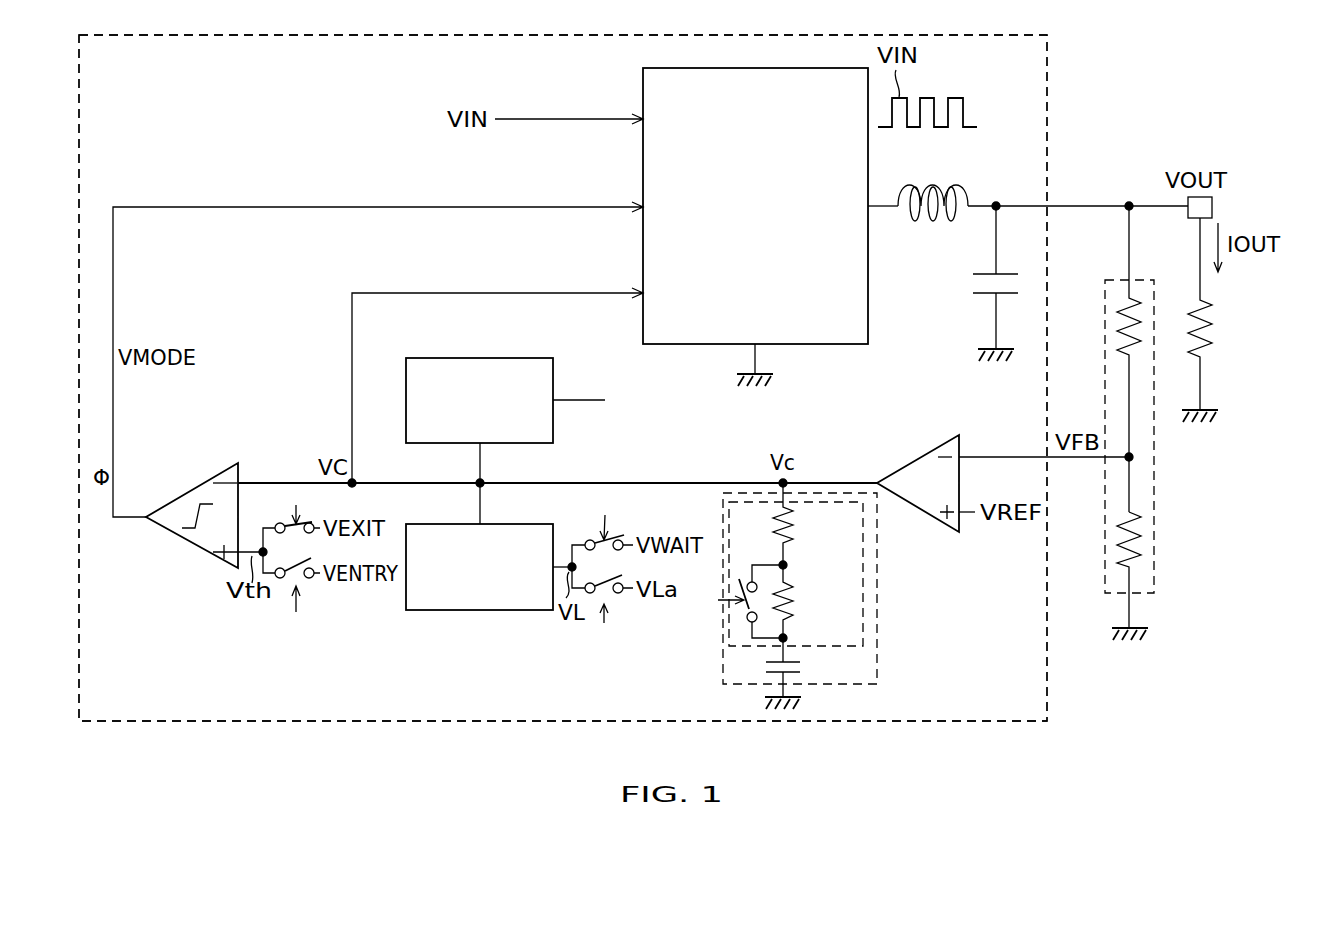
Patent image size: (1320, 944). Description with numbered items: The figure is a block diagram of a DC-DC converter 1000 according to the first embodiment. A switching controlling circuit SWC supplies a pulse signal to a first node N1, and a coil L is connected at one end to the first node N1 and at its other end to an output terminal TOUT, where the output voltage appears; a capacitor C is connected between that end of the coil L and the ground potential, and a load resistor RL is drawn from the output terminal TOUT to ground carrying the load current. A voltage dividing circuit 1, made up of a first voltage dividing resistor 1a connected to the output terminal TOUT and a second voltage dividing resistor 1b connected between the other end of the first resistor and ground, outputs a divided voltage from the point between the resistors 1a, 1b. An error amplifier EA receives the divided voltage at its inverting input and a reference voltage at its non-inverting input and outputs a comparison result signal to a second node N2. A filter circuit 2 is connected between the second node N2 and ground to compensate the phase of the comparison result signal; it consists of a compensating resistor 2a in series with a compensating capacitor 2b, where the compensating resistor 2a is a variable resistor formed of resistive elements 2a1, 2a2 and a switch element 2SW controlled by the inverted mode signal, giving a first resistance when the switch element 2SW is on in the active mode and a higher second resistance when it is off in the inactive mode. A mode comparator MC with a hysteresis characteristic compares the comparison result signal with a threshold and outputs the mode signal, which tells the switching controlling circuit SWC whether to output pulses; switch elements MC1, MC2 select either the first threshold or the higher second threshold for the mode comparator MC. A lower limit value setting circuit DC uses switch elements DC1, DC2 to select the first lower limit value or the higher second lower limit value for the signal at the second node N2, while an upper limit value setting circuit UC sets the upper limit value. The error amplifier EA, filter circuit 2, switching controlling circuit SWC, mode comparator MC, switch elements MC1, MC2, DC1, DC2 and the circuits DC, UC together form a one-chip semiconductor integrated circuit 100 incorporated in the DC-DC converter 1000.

The DC-DC converter 1000 is at (710, 757).
The semiconductor integrated circuit 100 is at (1047, 87).
The voltage dividing circuit 1 is at (1144, 423).
The first voltage dividing resistor 1a is at (1120, 320).
The second voltage dividing resistor 1b is at (1120, 533).
The filter circuit 2 is at (817, 596).
The compensating resistor 2a is at (807, 567).
The resistive element 2a1 is at (795, 531).
The resistive element 2a2 is at (795, 608).
The compensating capacitor 2b is at (800, 660).
The switch element 2SW is at (742, 610).
The switching controlling circuit SWC is at (643, 83).
The upper limit value setting circuit UC is at (480, 357).
The lower limit value setting circuit DC is at (480, 612).
The mode comparator MC is at (185, 492).
The switch element MC1 is at (296, 577).
The switch element MC2 is at (292, 524).
The switch element DC1 is at (602, 585).
The switch element DC2 is at (590, 540).
The error amplifier EA is at (912, 458).
The first node N1 is at (870, 205).
The second node N2 is at (484, 481).
The coil L is at (928, 185).
The capacitor C is at (1000, 272).
The load resistor RL is at (1213, 320).
The output terminal TOUT is at (1212, 207).